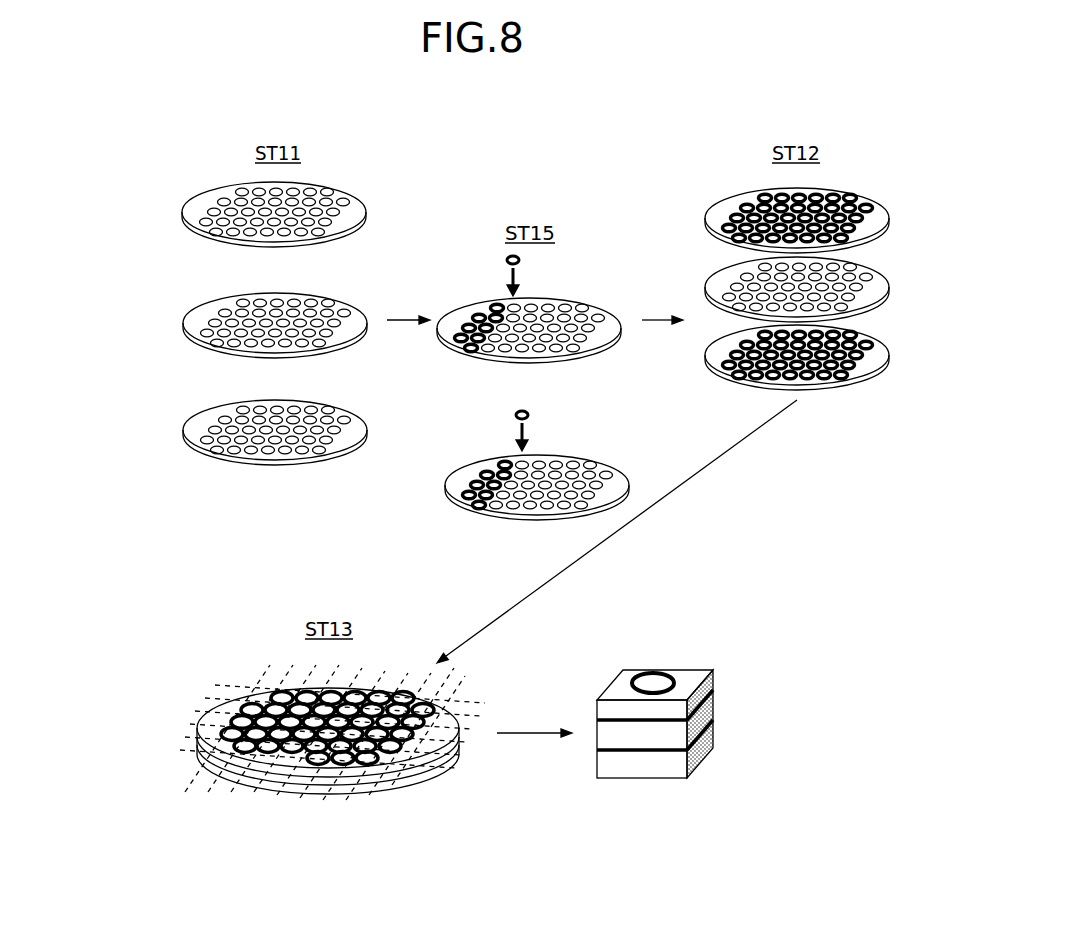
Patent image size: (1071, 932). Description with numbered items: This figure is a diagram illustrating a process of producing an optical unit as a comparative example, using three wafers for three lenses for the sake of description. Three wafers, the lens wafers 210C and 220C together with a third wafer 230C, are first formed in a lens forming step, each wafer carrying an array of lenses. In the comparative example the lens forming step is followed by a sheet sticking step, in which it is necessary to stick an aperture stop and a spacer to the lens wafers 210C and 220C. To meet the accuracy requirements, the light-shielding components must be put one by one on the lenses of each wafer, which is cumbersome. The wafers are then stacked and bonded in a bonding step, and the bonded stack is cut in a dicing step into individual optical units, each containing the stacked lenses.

The lens wafer 210C is at (191, 212).
The lens wafer 220C is at (192, 323).
The third wafer 230C is at (192, 430).